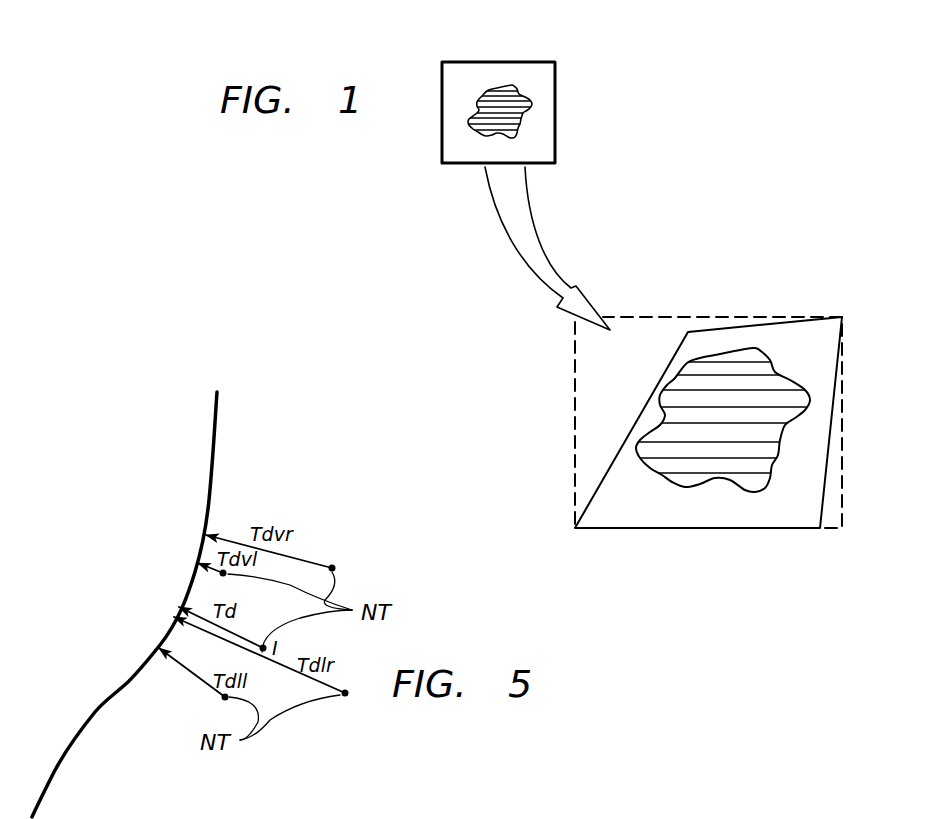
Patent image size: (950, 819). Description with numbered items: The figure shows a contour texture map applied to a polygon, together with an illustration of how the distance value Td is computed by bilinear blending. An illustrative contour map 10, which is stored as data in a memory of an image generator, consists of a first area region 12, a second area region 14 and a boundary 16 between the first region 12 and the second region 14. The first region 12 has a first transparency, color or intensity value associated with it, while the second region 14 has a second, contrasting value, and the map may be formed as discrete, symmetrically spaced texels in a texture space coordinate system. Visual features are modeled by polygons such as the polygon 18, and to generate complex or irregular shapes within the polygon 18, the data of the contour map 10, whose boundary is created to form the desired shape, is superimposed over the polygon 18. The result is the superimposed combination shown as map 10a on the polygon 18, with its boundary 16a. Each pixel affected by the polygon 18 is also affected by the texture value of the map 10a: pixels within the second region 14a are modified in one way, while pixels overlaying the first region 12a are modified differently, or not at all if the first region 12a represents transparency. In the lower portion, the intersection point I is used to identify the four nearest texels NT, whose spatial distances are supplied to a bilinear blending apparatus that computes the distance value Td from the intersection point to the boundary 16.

In FIG. 1, the contour map 10 is at (560, 117).
In FIG. 1, the first area region 12 is at (452, 76).
In FIG. 1, the second area region 14 is at (514, 96).
In FIG. 1, the boundary 16 is at (481, 140).
In FIG. 5, the boundary 16 is at (210, 462).
In FIG. 1, the superimposed contour map 10a is at (705, 315).
In FIG. 1, the first region of superimposed map 12a is at (616, 363).
In FIG. 1, the second region of superimposed map 14a is at (721, 430).
In FIG. 1, the superimposed boundary 16a is at (774, 357).
In FIG. 1, the polygon 18 is at (826, 508).